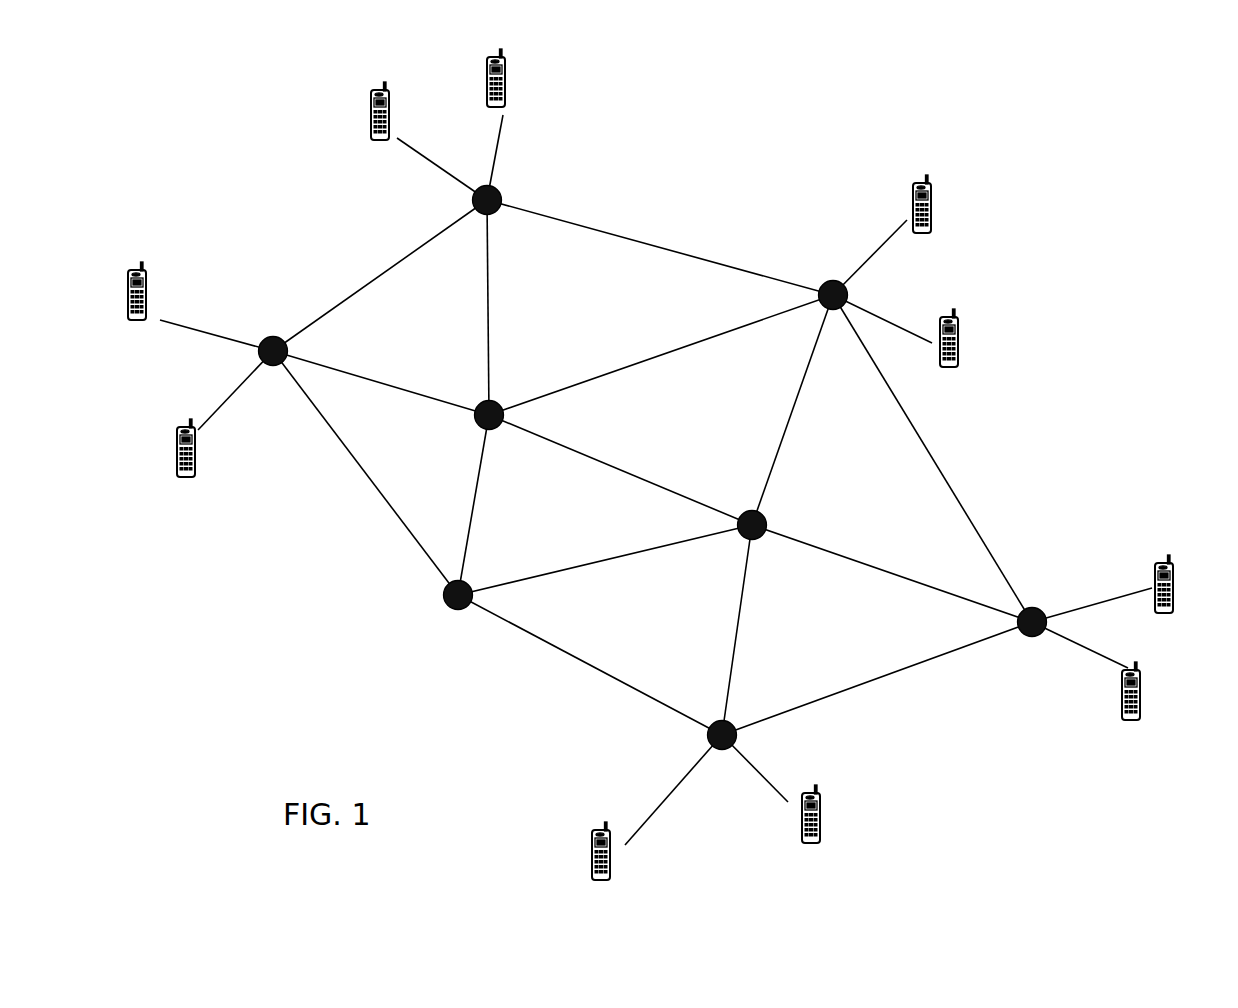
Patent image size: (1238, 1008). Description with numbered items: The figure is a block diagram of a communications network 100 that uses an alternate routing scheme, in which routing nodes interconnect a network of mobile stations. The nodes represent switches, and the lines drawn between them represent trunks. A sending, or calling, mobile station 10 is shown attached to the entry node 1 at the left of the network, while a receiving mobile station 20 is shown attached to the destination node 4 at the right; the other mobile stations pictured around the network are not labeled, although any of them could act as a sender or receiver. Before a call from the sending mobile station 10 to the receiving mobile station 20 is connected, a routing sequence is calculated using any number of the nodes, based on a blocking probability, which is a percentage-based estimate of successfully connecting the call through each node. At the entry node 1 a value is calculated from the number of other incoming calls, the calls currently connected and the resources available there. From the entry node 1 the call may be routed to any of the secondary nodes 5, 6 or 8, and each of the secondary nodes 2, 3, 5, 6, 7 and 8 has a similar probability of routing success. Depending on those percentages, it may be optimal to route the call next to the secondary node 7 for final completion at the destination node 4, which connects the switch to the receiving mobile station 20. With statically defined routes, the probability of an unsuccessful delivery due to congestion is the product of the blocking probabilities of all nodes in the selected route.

The communications network 100 is at (642, 464).
The entry node 1 is at (273, 340).
The secondary node 2 is at (833, 281).
The secondary node 3 is at (722, 726).
The destination node 4 is at (1032, 638).
The secondary node 5 is at (499, 199).
The secondary node 6 is at (485, 406).
The secondary node 7 is at (752, 514).
The secondary node 8 is at (450, 603).
The sending mobile station 10 is at (115, 277).
The receiving mobile station 20 is at (1112, 706).